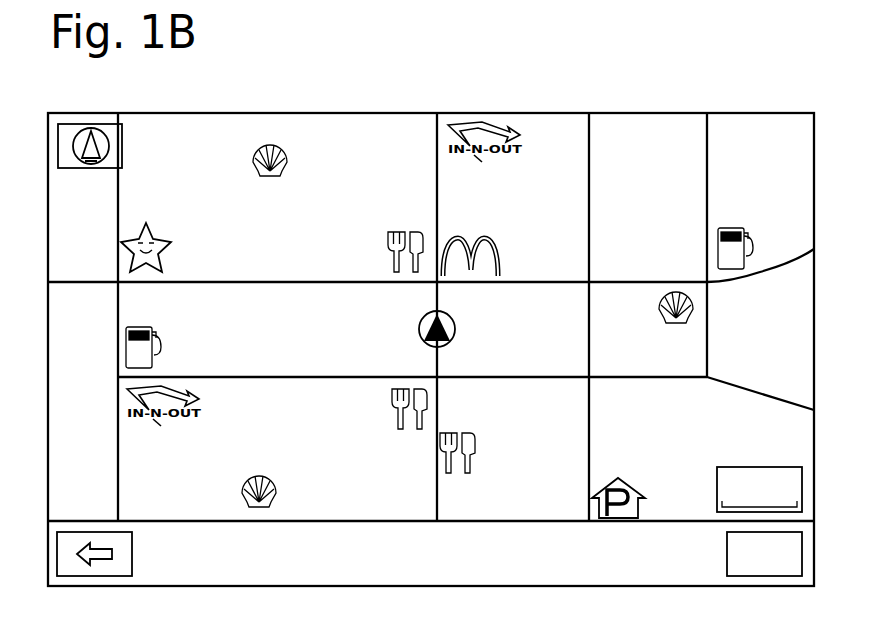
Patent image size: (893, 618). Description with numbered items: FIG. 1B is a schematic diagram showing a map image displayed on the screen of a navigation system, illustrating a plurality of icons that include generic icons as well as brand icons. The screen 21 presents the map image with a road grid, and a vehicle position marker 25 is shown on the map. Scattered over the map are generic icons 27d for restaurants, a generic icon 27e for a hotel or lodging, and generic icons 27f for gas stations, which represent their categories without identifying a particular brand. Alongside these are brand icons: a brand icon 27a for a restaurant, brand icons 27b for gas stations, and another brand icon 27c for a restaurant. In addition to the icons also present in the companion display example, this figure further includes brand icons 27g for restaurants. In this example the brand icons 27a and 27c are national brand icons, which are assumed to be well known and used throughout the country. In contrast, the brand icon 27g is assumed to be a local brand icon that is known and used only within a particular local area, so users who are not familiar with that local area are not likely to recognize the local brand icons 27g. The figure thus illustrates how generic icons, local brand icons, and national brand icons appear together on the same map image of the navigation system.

The map display screen 21 is at (593, 80).
The vehicle position marker 25 is at (451, 341).
The brand icon for a restaurant 27a is at (149, 232).
The brand icons for gas stations 27b is at (291, 160).
The brand icon for a restaurant 27c is at (491, 246).
The generic icons for restaurants 27d is at (392, 235).
The generic icon for a hotel/lodging 27e is at (620, 480).
The generic icons for gas stations 27f is at (735, 228).
The brand icons for restaurants 27g is at (490, 162).